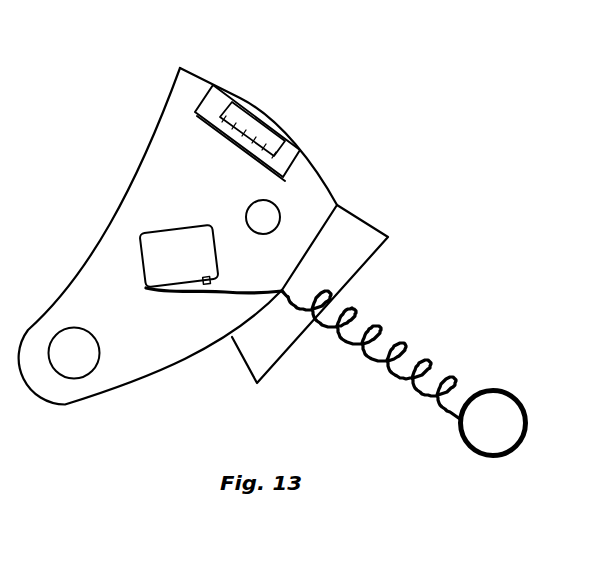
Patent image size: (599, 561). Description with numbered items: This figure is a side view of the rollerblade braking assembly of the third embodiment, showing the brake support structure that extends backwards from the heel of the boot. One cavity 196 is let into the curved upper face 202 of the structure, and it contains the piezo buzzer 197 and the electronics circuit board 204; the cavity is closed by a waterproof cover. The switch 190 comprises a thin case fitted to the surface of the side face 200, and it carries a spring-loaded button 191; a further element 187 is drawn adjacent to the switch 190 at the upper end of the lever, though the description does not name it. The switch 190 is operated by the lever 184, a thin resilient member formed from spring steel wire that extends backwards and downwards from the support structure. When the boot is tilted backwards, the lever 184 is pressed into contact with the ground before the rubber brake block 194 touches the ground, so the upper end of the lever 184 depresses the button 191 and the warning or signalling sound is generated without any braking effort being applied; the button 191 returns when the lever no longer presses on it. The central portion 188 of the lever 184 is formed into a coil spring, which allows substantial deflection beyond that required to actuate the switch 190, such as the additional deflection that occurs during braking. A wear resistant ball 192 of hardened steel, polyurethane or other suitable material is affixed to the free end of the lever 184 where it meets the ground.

The side face 200 is at (249, 214).
The curved upper face 202 is at (197, 67).
The electronics circuit board 204 is at (195, 112).
The cavity 196 is at (300, 150).
The piezo buzzer 197 is at (259, 116).
The rubber brake block 194 is at (373, 260).
The switch 190 is at (152, 234).
The button 191 is at (221, 281).
The cable 187 is at (189, 298).
The lever 184 is at (379, 355).
The central portion 188 is at (383, 326).
The wear resistant ball 192 is at (460, 442).